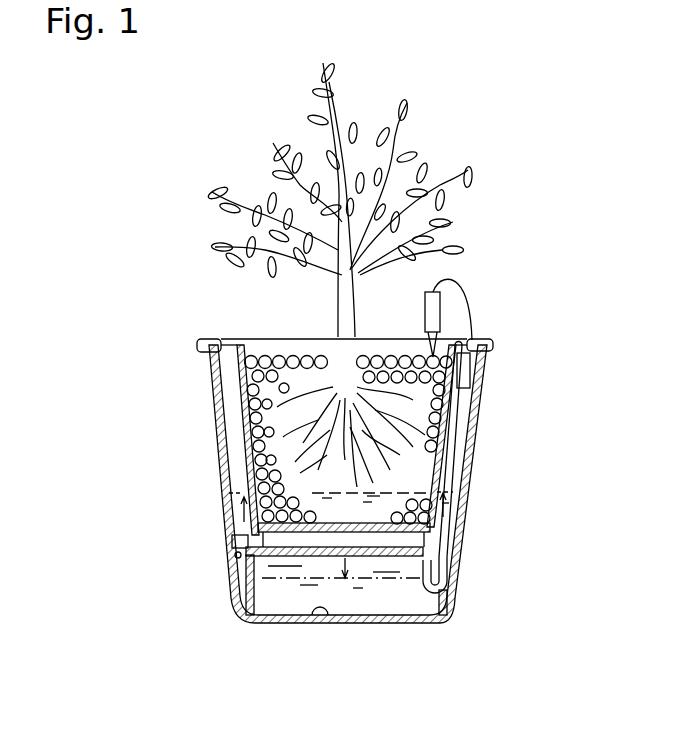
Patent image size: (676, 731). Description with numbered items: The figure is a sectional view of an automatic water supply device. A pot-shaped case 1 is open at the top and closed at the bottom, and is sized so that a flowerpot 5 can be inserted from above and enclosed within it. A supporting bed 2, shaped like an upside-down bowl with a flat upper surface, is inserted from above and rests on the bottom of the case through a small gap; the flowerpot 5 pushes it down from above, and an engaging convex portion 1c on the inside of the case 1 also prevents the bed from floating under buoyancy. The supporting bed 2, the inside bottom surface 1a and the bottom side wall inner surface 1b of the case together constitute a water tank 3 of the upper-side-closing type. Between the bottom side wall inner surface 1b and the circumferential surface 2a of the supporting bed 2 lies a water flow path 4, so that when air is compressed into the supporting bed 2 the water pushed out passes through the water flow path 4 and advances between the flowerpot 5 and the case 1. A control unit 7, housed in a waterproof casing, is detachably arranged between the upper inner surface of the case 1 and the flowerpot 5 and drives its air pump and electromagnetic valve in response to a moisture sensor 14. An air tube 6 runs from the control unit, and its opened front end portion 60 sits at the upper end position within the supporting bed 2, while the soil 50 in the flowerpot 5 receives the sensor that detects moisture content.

The pot-shaped case 1 is at (470, 507).
The inside bottom surface 1a is at (308, 616).
The bottom side wall inner surface 1b is at (232, 549).
The engaging convex portion 1c is at (237, 532).
The supporting bed 2 is at (244, 586).
The circumferential surface 2a is at (232, 568).
The water tank 3 is at (408, 577).
The water flow path 4 is at (462, 548).
The flowerpot 5 is at (245, 393).
The soil 50 is at (245, 475).
The air tube 6 is at (462, 455).
The opened front end portion 60 is at (448, 590).
The control unit 7 is at (464, 362).
The moisture sensor 14 is at (440, 310).